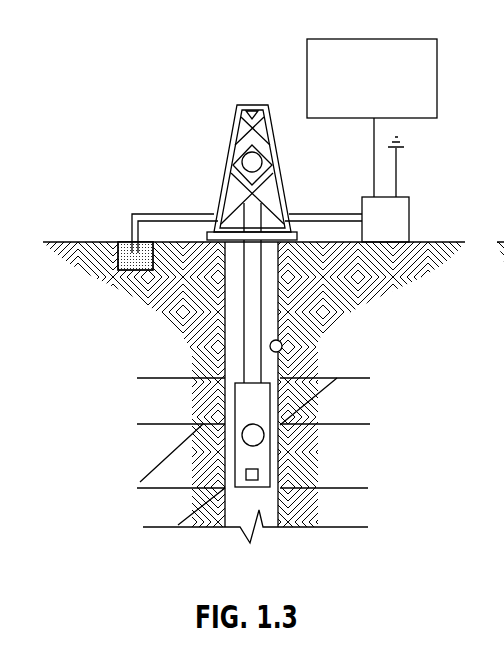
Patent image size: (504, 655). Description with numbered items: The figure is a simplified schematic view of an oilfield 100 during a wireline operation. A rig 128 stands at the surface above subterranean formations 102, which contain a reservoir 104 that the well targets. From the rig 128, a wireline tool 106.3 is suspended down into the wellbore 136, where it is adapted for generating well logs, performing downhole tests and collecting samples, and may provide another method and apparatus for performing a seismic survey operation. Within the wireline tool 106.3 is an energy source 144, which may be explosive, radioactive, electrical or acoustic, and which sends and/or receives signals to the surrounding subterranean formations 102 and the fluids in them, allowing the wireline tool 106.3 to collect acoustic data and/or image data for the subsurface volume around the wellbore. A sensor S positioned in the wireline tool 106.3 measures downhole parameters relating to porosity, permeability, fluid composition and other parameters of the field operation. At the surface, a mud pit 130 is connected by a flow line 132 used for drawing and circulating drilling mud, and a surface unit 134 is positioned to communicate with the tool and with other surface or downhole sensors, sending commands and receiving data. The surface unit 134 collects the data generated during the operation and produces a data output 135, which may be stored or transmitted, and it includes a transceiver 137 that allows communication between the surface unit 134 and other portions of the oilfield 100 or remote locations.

The oilfield 100 is at (150, 110).
The subterranean formations 102 is at (381, 364).
The reservoir 104 is at (368, 475).
The wireline tool 106.3 is at (235, 472).
The rig 128 is at (228, 160).
The mud pit 130 is at (129, 272).
The flow line 132 is at (132, 228).
The surface unit 134 is at (409, 210).
The data output 135 is at (373, 38).
The wellbore 136 is at (283, 346).
The transceiver 137 is at (396, 175).
The energy source 144 is at (253, 483).